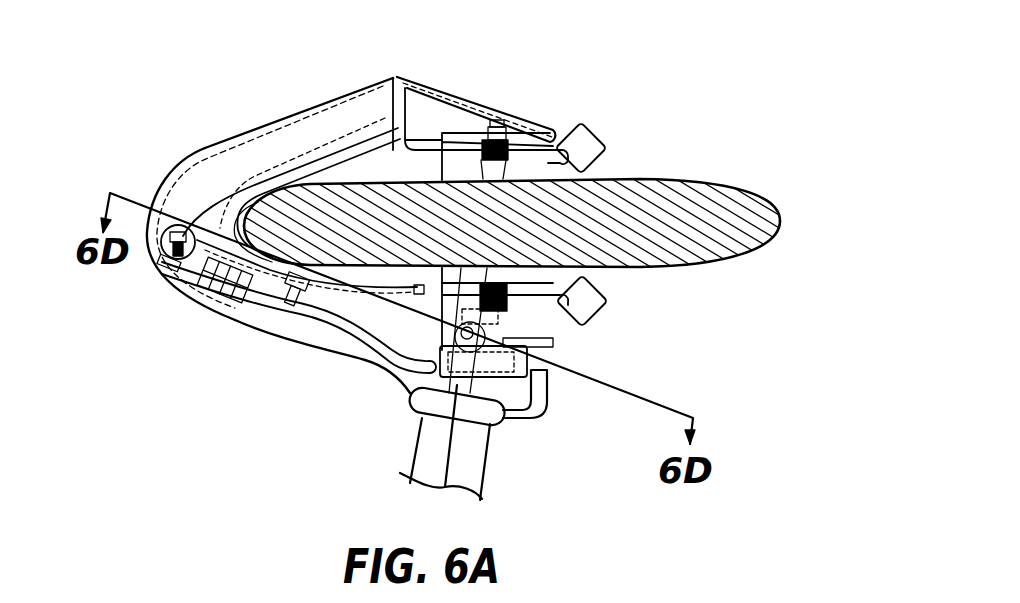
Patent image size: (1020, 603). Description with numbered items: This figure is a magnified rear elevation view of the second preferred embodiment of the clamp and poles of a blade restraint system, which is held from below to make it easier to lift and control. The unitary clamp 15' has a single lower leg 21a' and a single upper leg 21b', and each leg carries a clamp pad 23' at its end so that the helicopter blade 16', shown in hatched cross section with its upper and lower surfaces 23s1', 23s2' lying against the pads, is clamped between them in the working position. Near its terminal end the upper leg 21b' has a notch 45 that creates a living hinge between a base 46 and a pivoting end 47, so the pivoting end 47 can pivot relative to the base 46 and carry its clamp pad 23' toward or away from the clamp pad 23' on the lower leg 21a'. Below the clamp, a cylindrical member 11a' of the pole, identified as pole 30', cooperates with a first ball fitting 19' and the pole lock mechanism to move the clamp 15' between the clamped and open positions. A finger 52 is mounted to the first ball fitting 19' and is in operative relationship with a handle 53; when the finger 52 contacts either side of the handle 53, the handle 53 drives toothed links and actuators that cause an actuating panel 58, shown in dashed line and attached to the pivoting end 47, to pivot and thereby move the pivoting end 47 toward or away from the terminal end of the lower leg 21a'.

The clamp 15' is at (385, 261).
The upper leg 21b' is at (285, 156).
The base 46 is at (203, 150).
The actuating panel 58 is at (183, 183).
The notch 45 is at (395, 80).
The pivoting end 47 is at (477, 118).
The clamp pad 23' is at (625, 226).
The first surface 23s1' is at (518, 181).
The second surface 23s2' is at (518, 271).
The helicopter blade 16' is at (541, 229).
The lower leg 21a' is at (296, 309).
The handle 53 is at (330, 313).
The first ball fitting 19' is at (410, 413).
The rod 30' is at (382, 448).
The cylindrical member 11a' is at (518, 497).
The finger 52 is at (527, 418).